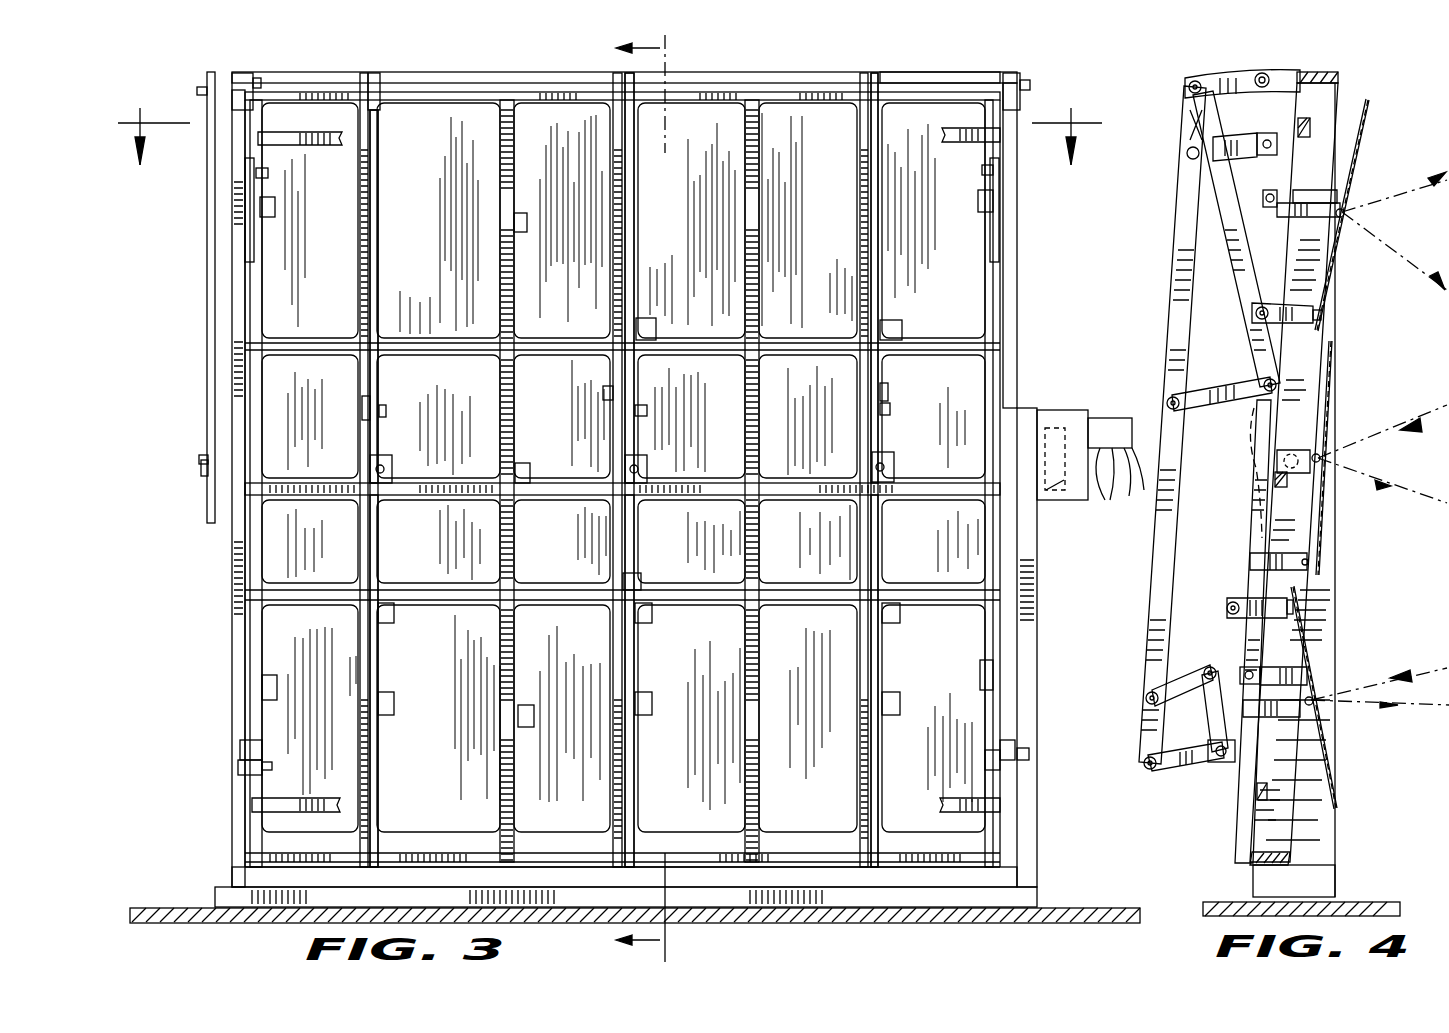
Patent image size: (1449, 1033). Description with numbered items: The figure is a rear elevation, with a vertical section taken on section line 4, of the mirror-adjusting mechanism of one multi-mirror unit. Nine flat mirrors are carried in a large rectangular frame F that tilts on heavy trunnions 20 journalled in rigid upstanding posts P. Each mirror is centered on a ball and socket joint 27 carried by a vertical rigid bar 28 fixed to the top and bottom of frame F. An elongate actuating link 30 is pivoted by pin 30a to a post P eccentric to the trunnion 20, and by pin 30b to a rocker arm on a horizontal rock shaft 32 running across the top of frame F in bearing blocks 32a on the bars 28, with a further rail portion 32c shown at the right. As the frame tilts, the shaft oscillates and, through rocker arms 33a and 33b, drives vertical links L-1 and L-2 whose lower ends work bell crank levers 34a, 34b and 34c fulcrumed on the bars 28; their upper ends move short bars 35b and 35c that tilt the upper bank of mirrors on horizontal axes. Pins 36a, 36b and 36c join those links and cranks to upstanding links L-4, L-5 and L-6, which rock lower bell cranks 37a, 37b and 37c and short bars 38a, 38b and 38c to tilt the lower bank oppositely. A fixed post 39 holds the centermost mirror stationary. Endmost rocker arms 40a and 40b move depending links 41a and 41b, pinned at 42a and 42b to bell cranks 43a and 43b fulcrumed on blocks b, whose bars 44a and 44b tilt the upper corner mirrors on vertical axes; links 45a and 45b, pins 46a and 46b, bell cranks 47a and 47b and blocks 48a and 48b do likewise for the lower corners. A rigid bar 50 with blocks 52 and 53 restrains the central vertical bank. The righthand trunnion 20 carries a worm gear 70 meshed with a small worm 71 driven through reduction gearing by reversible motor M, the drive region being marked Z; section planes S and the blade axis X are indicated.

In FIG. 3, the trunnion 20 is at (198, 458).
In FIG. 4, the trunnion 20 is at (1310, 452).
In FIG. 3, the ball and socket joint 27 is at (380, 469).
In FIG. 3, the vertical rigid bar 28 is at (360, 323).
In FIG. 4, the vertical rigid bar 28 is at (1258, 545).
In FIG. 3, the actuating link 30 is at (207, 220).
In FIG. 4, the actuating link 30 is at (1240, 300).
In FIG. 3, the pivot pin 30a is at (201, 480).
In FIG. 4, the pivot pin 30a is at (1255, 470).
In FIG. 3, the pin 30b is at (198, 87).
In FIG. 3, the rock shaft 32 is at (960, 72).
In FIG. 4, the rock shaft 32 is at (1262, 73).
In FIG. 3, the bearing blocks 32a is at (370, 72).
In FIG. 4, the bearing blocks 32a is at (1320, 72).
In FIG. 3, the top rail end segment 32c is at (880, 72).
In FIG. 3, the rocker arm 33a is at (380, 80).
In FIG. 4, the rocker arm 33b is at (1212, 78).
In FIG. 3, the bell crank lever 34a is at (368, 395).
In FIG. 3, the bell crank lever 34b is at (603, 390).
In FIG. 4, the bell crank lever 34b is at (1225, 405).
In FIG. 3, the bell crank lever 34c is at (880, 393).
In FIG. 3, the forwardly protruding bar 35b is at (656, 330).
In FIG. 4, the forwardly protruding bar 35b is at (1300, 300).
In FIG. 3, the forwardly protruding bar 35c is at (902, 330).
In FIG. 3, the pin 36a is at (386, 411).
In FIG. 3, the pin 36b is at (647, 410).
In FIG. 3, the pin 36c is at (890, 408).
In FIG. 3, the bell crank lever 37a is at (394, 700).
In FIG. 3, the bell crank lever 37b is at (652, 700).
In FIG. 3, the bell crank lever 37c is at (900, 690).
In FIG. 4, the bell crank lever 37c is at (1300, 660).
In FIG. 3, the short bar 38a is at (394, 620).
In FIG. 3, the short bar 38b is at (652, 620).
In FIG. 3, the short bar 38c is at (900, 620).
In FIG. 4, the short bar 38c is at (1228, 598).
In FIG. 3, the fixed post 39 is at (641, 580).
In FIG. 4, the fixed post 39 is at (1290, 552).
In FIG. 3, the rocker arm 40a is at (245, 72).
In FIG. 3, the rocker arm 40b is at (1010, 72).
In FIG. 3, the depending link 41a is at (265, 132).
In FIG. 4, the depending link 41a is at (1213, 135).
In FIG. 3, the depending link 41b is at (1005, 150).
In FIG. 3, the pin 42a is at (268, 173).
In FIG. 3, the pin 42b is at (982, 168).
In FIG. 3, the bell crank lever 43a is at (254, 243).
In FIG. 4, the bell crank lever 43a is at (1263, 198).
In FIG. 3, the bell crank lever 43b is at (999, 225).
In FIG. 3, the forwardly extending short bar 44a is at (275, 215).
In FIG. 3, the forwardly extending short bar 44b is at (978, 210).
In FIG. 3, the upstanding link 45a is at (262, 458).
In FIG. 4, the upstanding link 45a is at (1160, 775).
In FIG. 3, the upstanding link 45b is at (985, 535).
In FIG. 3, the pin 46a is at (272, 766).
In FIG. 3, the pin 46b is at (985, 765).
In FIG. 3, the bell crank lever 47a is at (262, 750).
In FIG. 4, the bell crank lever 47a is at (1215, 765).
In FIG. 3, the bell crank lever 47b is at (1015, 745).
In FIG. 3, the short block 48a is at (277, 690).
In FIG. 3, the short block 48b is at (980, 680).
In FIG. 3, the rigid upstanding bar 50 is at (520, 475).
In FIG. 3, the block 52 is at (530, 475).
In FIG. 3, the block 53 is at (534, 720).
In FIG. 3, the worm gear 70 is at (1080, 500).
In FIG. 3, the worm 71 is at (1058, 428).
In FIG. 3, the electrical motor M is at (1117, 418).
In FIG. 3, the drive connection Z is at (1060, 490).
In FIG. 3, the rectangular frame F is at (223, 273).
In FIG. 4, the rectangular frame F is at (1345, 85).
In FIG. 3, the upstanding post P is at (195, 588).
In FIG. 4, the upstanding post P is at (1312, 600).
In FIG. 3, the section line S is at (610, 118).
In FIG. 4, the section line S is at (1405, 180).
In FIG. 4, the blade pivot axis X is at (1445, 490).
In FIG. 3, the block b is at (1029, 754).
In FIG. 4, the block b is at (1290, 120).
In FIG. 3, the section line 4 is at (668, 498).
In FIG. 3, the vertical link L-1 is at (390, 165).
In FIG. 3, the vertical link L-2 is at (645, 200).
In FIG. 4, the vertical link L-2 is at (1160, 275).
In FIG. 3, the upstanding link L-4 is at (380, 555).
In FIG. 3, the upstanding link L-5 is at (633, 555).
In FIG. 4, the upstanding link L-5 is at (1170, 650).
In FIG. 3, the upstanding link L-6 is at (882, 578).